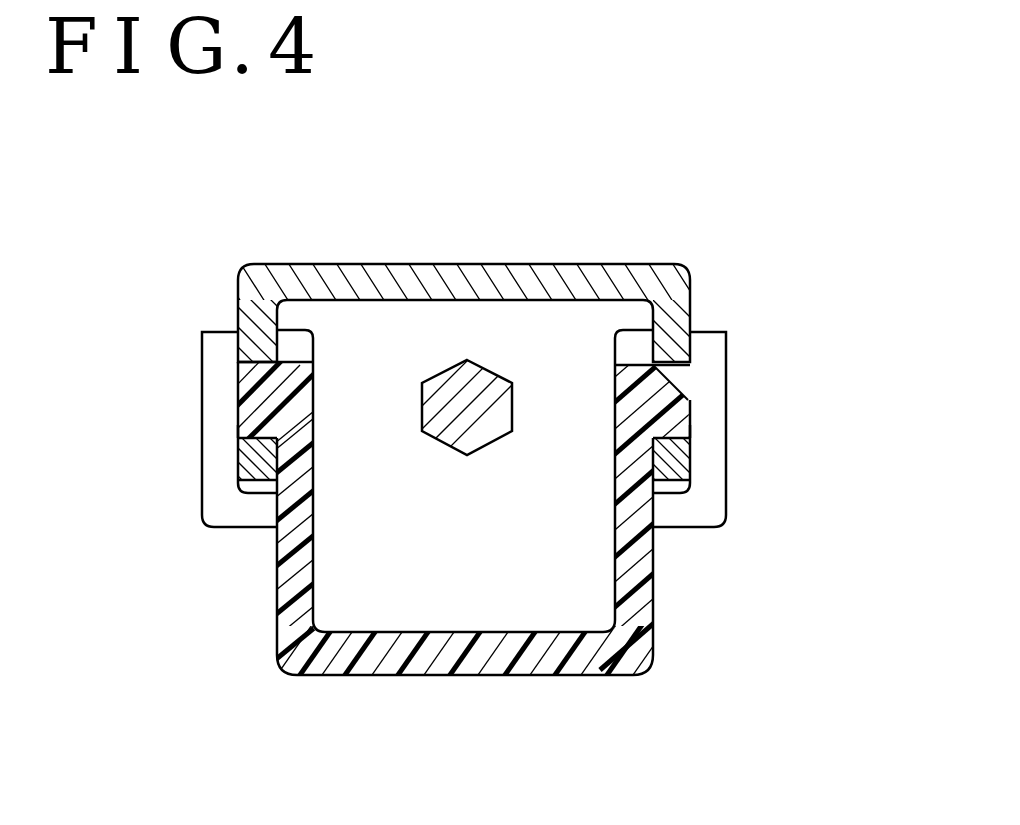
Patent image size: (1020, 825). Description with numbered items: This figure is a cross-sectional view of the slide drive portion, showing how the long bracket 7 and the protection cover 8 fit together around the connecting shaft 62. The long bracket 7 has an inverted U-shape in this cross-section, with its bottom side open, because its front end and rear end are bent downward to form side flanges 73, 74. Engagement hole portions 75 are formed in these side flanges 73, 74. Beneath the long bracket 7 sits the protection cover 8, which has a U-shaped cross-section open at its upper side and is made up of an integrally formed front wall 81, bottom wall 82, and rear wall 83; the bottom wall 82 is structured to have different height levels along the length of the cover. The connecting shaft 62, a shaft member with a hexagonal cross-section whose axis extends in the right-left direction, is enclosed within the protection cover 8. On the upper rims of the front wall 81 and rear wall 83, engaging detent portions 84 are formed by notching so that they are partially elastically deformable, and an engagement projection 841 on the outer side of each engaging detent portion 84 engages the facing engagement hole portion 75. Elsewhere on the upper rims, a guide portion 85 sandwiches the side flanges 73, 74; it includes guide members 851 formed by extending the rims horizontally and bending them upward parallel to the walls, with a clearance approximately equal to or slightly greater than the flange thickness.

The long bracket 7 is at (458, 277).
The side flange 73 is at (240, 303).
The side flange 74 is at (690, 303).
The engagement hole portion 75 is at (232, 377).
The protection cover 8 is at (458, 673).
The front wall 81 is at (277, 563).
The bottom wall 82 is at (557, 673).
The rear wall 83 is at (653, 575).
The engaging detent portion 84 is at (302, 432).
The engagement projection 841 is at (240, 423).
The guide portion 85 is at (480, 484).
The guide member 851 is at (215, 448).
The connecting shaft 62 is at (448, 430).